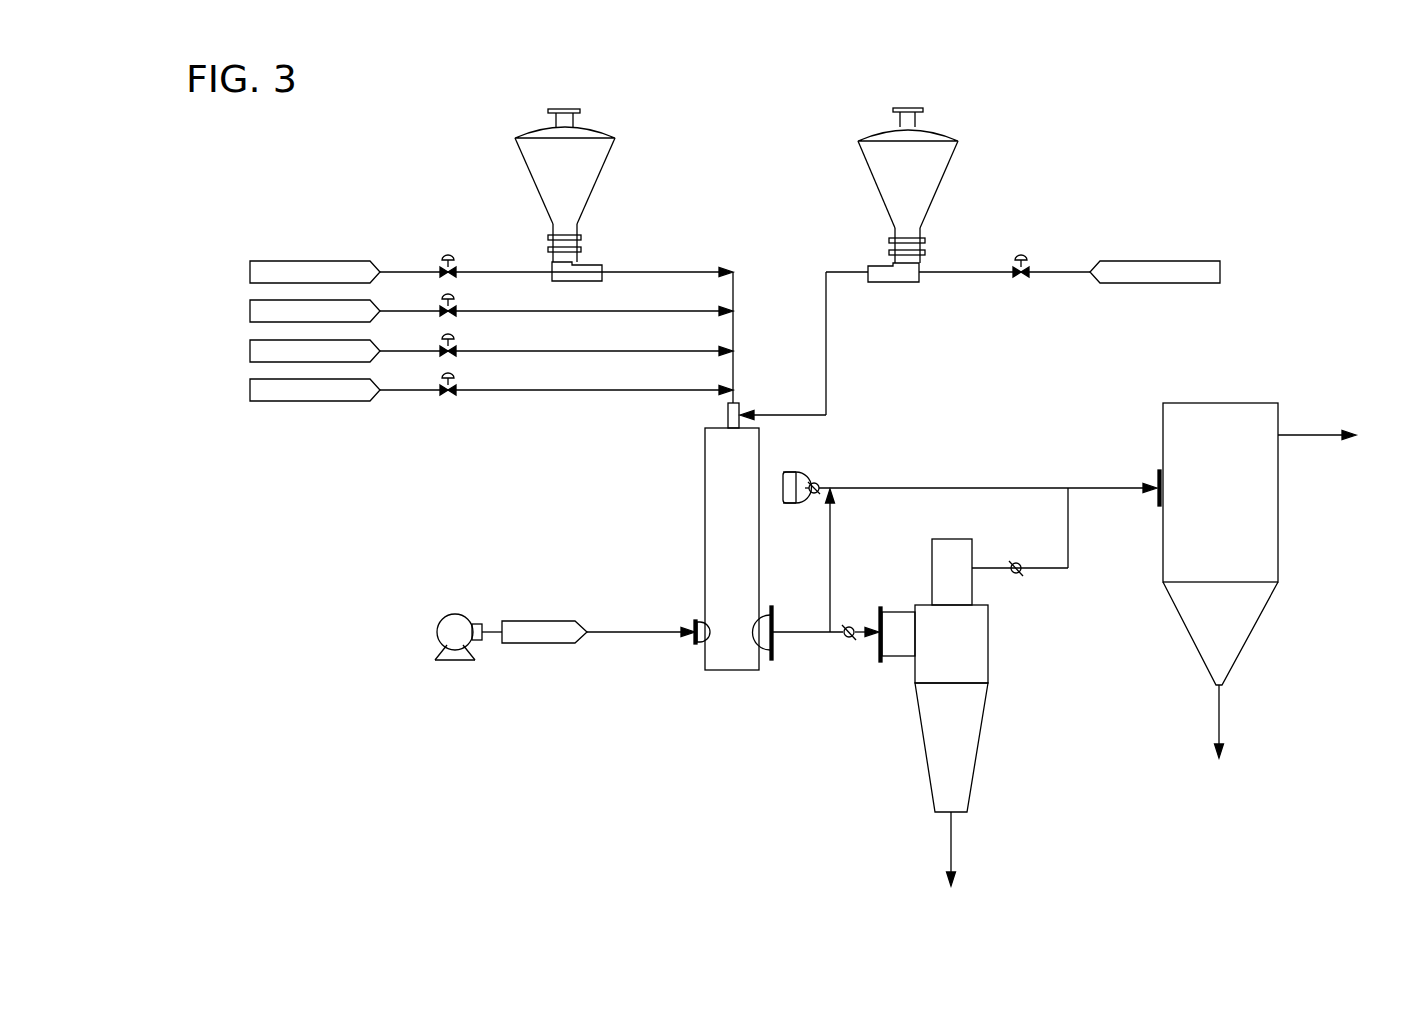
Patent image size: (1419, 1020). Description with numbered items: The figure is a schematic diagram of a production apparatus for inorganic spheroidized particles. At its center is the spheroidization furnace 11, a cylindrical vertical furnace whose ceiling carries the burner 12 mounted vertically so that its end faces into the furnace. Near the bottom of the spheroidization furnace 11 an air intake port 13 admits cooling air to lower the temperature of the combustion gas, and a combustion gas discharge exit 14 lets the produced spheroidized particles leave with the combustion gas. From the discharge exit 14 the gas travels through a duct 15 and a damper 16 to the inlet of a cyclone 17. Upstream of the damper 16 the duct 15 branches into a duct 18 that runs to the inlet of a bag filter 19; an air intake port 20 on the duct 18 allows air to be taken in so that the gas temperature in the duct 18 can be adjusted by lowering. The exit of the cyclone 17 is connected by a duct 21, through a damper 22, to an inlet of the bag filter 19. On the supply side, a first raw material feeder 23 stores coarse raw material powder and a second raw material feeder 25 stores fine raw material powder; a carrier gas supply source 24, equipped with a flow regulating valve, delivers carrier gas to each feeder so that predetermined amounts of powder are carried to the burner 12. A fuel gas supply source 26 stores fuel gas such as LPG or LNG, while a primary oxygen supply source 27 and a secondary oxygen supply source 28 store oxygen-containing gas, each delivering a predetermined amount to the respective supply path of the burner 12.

The spheroidization furnace 11 is at (716, 545).
The burner 12 is at (728, 410).
The air intake port 13 is at (698, 648).
The combustion gas discharge exit 14 is at (762, 652).
The duct 15 is at (808, 636).
The damper 16 is at (852, 622).
The cyclone 17 is at (968, 650).
The duct 18 is at (827, 543).
The bag filter 19 is at (1255, 497).
The air intake port 20 is at (790, 478).
The duct 21 is at (1070, 524).
The damper 22 is at (1017, 562).
The first raw material feeder 23 is at (540, 164).
The carrier gas supply source 24 is at (248, 272).
The second raw material feeder 25 is at (924, 181).
The fuel gas supply source 26 is at (248, 311).
The primary oxygen supply source 27 is at (248, 351).
The secondary oxygen supply source 28 is at (248, 390).